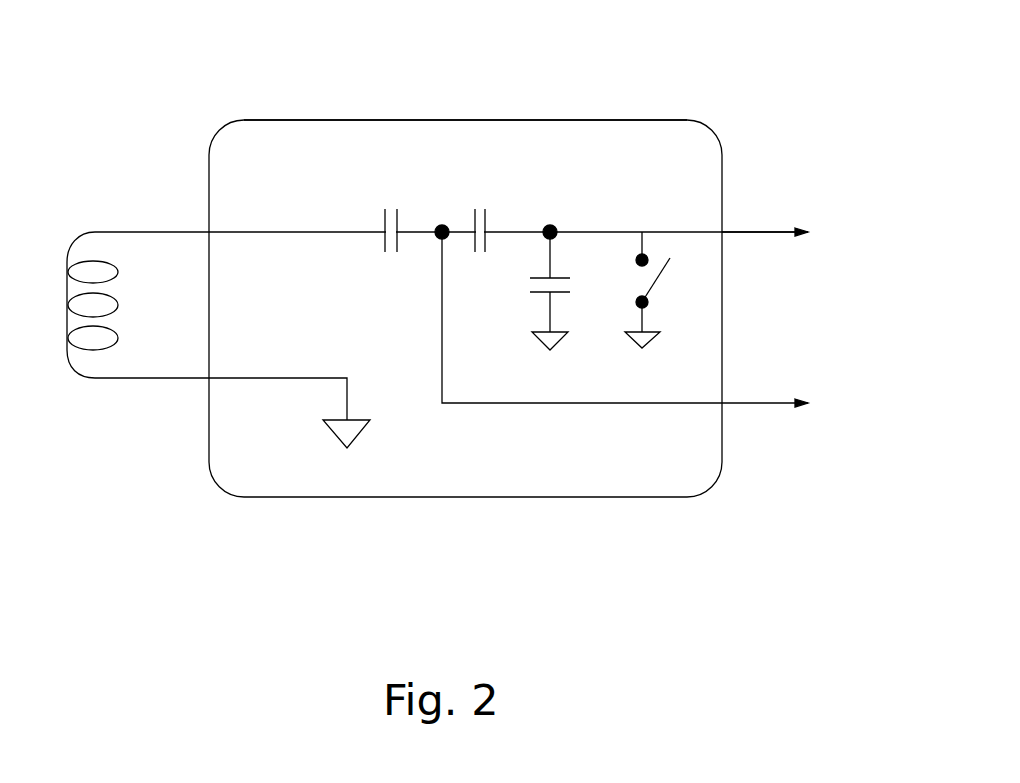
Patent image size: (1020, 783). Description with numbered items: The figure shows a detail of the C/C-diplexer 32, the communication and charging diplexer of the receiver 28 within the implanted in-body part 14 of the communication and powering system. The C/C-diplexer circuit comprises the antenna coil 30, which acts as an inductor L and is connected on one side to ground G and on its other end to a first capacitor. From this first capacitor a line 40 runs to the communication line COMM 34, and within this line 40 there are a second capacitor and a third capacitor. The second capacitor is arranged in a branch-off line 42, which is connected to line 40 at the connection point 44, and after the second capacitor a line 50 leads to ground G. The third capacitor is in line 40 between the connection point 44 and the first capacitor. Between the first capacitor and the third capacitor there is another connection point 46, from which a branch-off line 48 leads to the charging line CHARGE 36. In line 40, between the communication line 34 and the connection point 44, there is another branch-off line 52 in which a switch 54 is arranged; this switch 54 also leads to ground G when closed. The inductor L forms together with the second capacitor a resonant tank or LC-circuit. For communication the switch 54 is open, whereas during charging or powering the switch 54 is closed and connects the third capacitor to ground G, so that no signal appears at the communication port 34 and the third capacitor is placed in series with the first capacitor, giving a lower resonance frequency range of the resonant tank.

The implanted in-body part 14 is at (82, 92).
The receiver 28 is at (305, 515).
The antenna coil 30 is at (70, 378).
The C/C-diplexer 32 is at (510, 99).
The communication line COMM 34 is at (803, 220).
The charging line CHARGE 36 is at (810, 412).
The line 40 is at (655, 228).
The branch-off line 42 is at (548, 258).
The connection point 44 is at (550, 224).
The connection point 46 is at (442, 224).
The branch-off line 48 is at (548, 405).
The line to ground 50 is at (552, 314).
The branch-off line 52 is at (643, 235).
The switch 54 is at (667, 283).